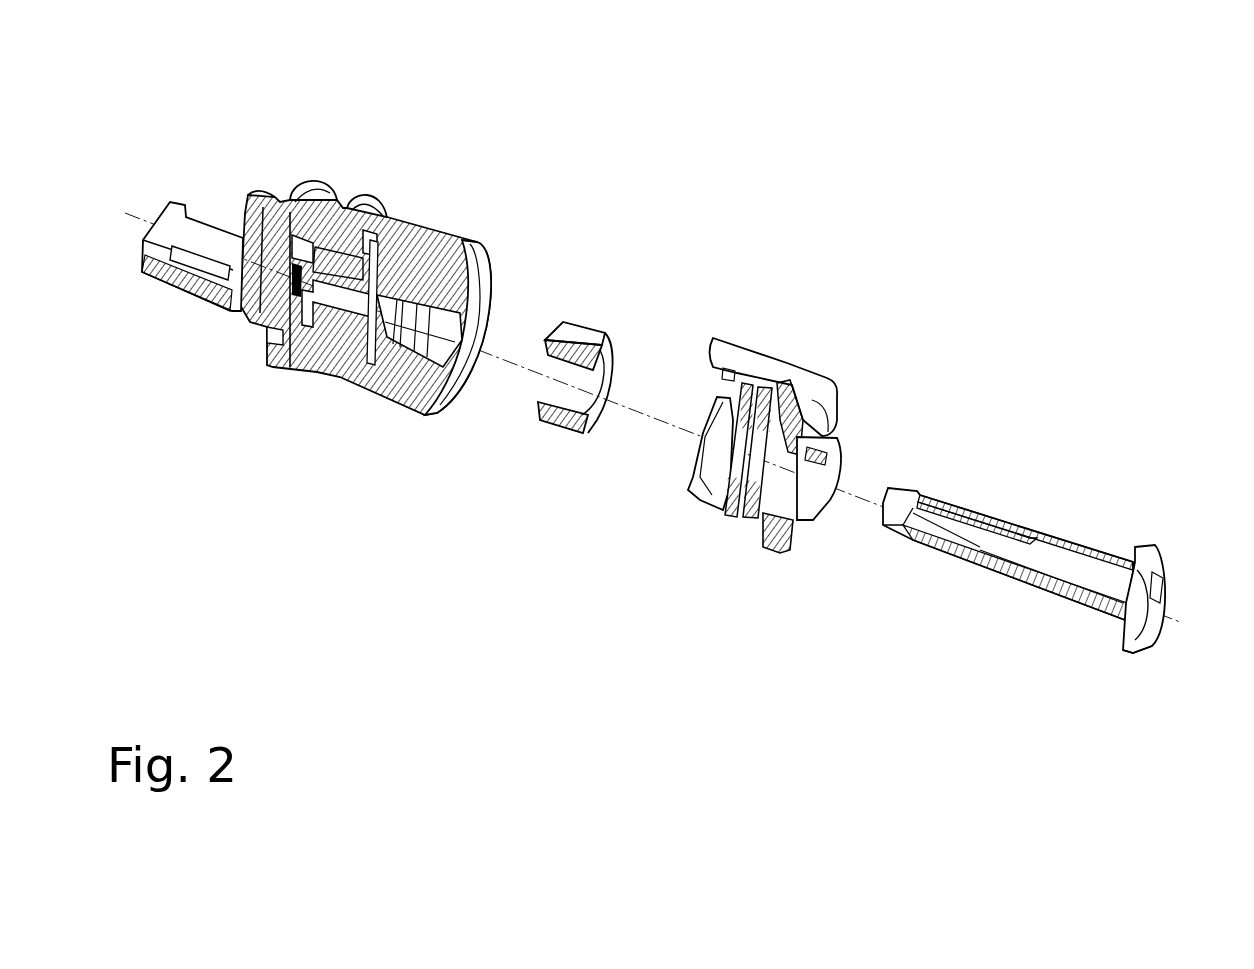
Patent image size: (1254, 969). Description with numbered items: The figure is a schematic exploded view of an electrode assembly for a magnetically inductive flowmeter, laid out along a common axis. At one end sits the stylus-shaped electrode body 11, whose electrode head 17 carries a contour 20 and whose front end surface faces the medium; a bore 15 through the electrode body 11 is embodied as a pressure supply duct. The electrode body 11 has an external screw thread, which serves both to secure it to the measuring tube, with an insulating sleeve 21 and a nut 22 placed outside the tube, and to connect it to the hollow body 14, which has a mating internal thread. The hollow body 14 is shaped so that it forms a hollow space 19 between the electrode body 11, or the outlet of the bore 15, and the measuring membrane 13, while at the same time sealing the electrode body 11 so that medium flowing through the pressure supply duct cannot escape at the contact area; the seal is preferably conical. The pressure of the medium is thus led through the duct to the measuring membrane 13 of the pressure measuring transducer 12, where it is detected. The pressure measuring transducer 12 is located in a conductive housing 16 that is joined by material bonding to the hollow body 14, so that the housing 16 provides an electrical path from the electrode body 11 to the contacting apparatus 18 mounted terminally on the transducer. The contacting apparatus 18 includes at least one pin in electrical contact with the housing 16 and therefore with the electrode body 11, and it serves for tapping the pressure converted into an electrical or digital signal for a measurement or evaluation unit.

The electrode body 11 is at (1010, 583).
The pressure measuring transducer 12 is at (312, 332).
The measuring membrane 13 is at (380, 290).
The hollow body 14 is at (405, 407).
The bore 15 is at (955, 530).
The housing 16 is at (313, 190).
The electrode head 17 is at (1130, 650).
The contacting apparatus 18 is at (225, 212).
The hollow space 19 is at (452, 328).
The contour 20 is at (1152, 590).
The insulating sleeve 21 is at (810, 378).
The nut 22 is at (585, 340).